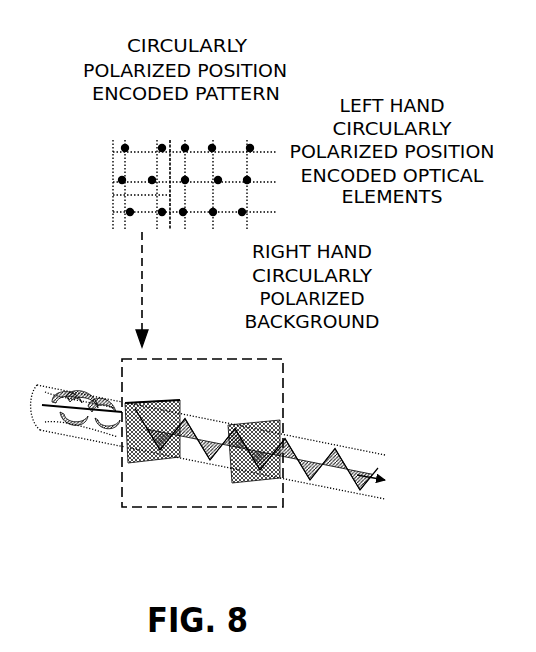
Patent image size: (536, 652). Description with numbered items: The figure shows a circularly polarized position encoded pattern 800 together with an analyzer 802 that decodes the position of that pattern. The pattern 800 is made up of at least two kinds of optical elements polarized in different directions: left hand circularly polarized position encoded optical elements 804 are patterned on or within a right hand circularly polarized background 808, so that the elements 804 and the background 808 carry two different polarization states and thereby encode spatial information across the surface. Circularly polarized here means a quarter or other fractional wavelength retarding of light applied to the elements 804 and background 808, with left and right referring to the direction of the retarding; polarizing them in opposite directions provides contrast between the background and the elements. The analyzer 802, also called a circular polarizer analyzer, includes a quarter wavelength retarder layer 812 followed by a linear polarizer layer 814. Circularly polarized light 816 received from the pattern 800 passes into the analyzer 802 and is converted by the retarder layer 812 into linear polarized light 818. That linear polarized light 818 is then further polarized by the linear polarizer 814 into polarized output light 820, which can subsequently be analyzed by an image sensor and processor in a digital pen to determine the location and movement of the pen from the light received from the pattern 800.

The circularly polarized position encoded pattern 800 is at (344, 58).
The analyzer 802 is at (140, 507).
The position encoded optical elements 804 is at (252, 146).
The background 808 is at (203, 200).
The quarter wavelength retarder layer 812 is at (167, 398).
The linear polarizer layer 814 is at (260, 422).
The circularly polarized light 816 is at (78, 440).
The linear polarized light 818 is at (192, 472).
The polarized output light 820 is at (339, 438).